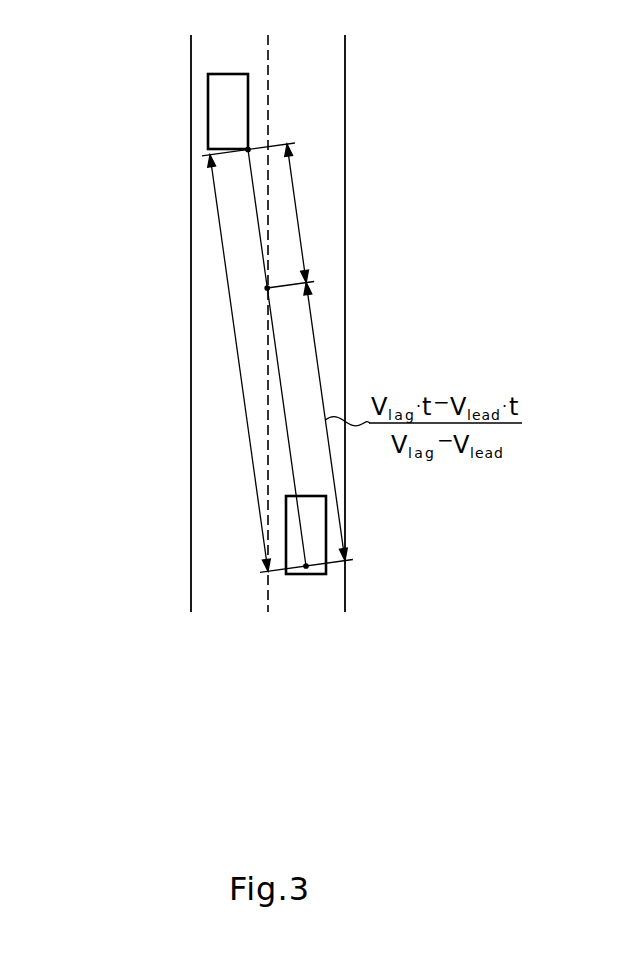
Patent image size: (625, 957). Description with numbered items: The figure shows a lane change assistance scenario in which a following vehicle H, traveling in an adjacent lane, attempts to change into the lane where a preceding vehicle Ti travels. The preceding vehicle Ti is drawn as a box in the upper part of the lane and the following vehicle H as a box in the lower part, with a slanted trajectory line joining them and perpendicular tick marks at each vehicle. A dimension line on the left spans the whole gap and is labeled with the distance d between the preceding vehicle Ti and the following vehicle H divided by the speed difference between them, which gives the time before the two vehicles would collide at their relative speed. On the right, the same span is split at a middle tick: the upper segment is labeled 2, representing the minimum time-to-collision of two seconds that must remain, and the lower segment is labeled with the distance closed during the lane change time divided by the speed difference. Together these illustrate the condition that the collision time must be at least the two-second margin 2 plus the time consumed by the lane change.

The time-to-collision margin 2 is at (300, 213).
The preceding vehicle Ti is at (228, 111).
The following vehicle H is at (306, 535).
The distance between preceding vehicle and following vehicle d is at (239, 365).